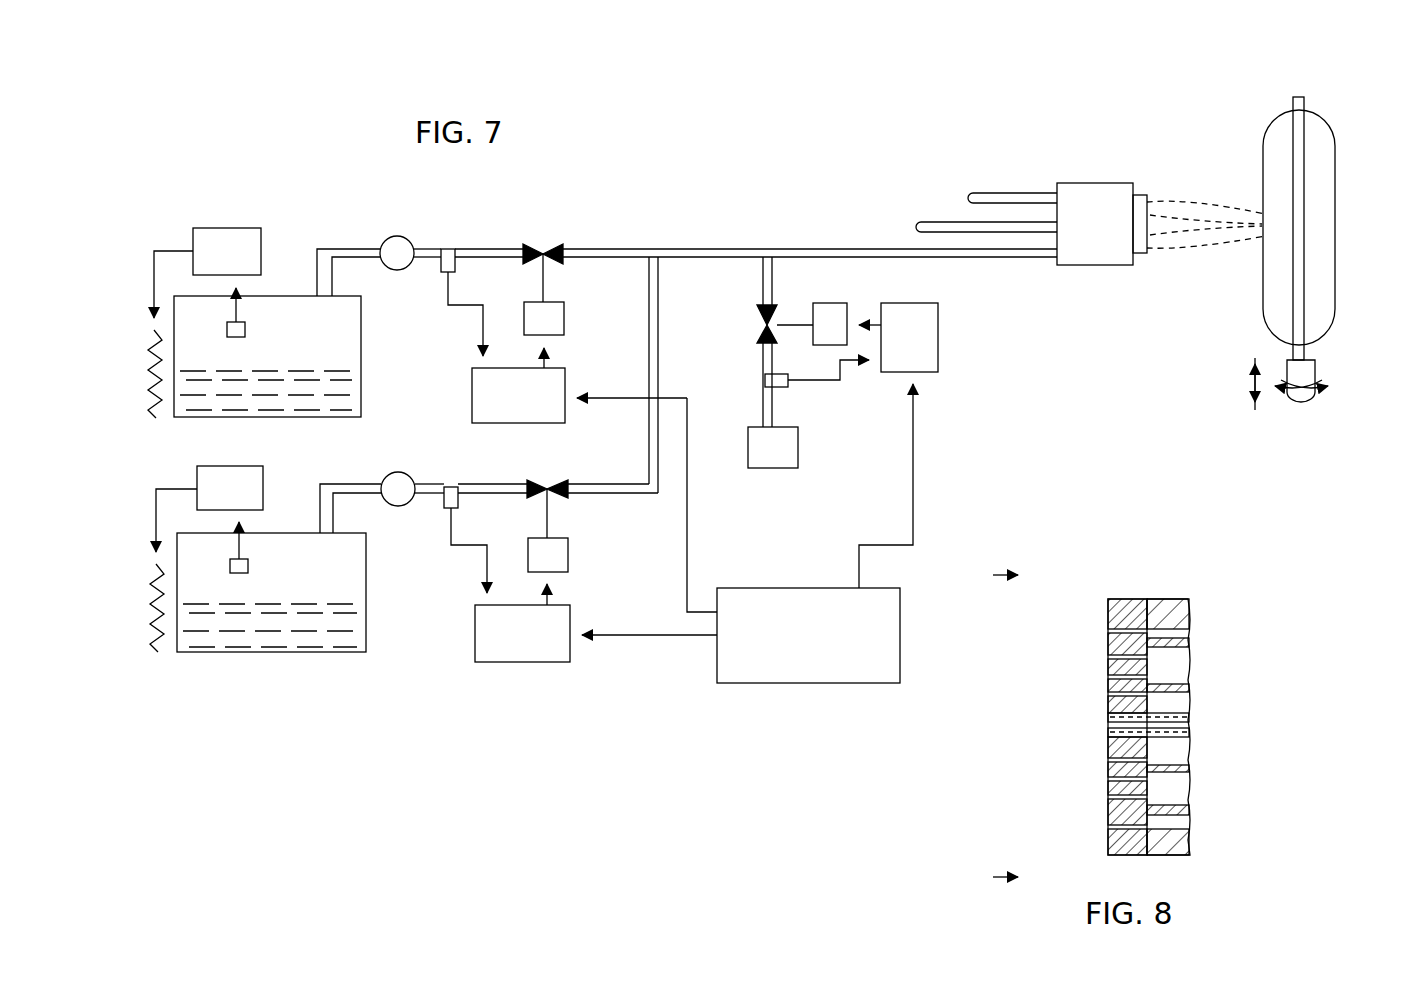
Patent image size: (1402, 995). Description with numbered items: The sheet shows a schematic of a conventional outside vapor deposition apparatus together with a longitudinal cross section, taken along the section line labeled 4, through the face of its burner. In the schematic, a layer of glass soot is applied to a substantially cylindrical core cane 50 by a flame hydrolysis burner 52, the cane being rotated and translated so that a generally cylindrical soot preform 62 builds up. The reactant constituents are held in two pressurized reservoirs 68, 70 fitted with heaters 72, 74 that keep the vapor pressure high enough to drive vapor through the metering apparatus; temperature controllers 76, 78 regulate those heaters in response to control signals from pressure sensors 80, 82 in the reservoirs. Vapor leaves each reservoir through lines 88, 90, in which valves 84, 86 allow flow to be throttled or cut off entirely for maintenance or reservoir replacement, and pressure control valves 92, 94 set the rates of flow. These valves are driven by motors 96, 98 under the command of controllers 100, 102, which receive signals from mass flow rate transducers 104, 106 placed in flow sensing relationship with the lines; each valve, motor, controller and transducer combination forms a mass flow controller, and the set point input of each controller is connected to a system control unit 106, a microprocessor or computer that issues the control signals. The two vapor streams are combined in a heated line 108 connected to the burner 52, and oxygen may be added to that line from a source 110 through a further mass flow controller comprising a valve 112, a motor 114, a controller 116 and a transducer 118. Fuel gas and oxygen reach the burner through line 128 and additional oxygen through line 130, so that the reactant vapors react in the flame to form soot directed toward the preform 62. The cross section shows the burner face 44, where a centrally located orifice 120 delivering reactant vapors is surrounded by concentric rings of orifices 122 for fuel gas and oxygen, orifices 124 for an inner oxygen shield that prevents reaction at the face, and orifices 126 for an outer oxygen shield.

In FIG. 8, the section line 4- 4 is at (1023, 726).
In FIG. 8, the burner face 44 is at (1108, 604).
In FIG. 7, the core cane 50 is at (1304, 101).
In FIG. 7, the flame hydrolysis burner 52 is at (1110, 183).
In FIG. 8, the flame hydrolysis burner 52 is at (1160, 598).
In FIG. 7, the soot preform 62 is at (1335, 258).
In FIG. 7, the reservoir 68 is at (361, 350).
In FIG. 7, the reservoir 70 is at (366, 585).
In FIG. 7, the heater 72 is at (140, 370).
In FIG. 7, the heater 74 is at (148, 602).
In FIG. 7, the temperature controller 76 is at (226, 228).
In FIG. 7, the temperature controller 78 is at (230, 470).
In FIG. 7, the pressure sensor 80 is at (245, 330).
In FIG. 7, the pressure sensor 82 is at (248, 566).
In FIG. 7, the valve 84 is at (397, 236).
In FIG. 7, the valve 86 is at (400, 472).
In FIG. 7, the line 88 is at (335, 248).
In FIG. 7, the line 90 is at (338, 483).
In FIG. 7, the pressure control valve 92 is at (543, 244).
In FIG. 7, the pressure control valve 94 is at (549, 480).
In FIG. 7, the motor 96 is at (564, 318).
In FIG. 7, the motor 98 is at (568, 560).
In FIG. 7, the controller 100 is at (565, 382).
In FIG. 7, the controller 102 is at (570, 618).
In FIG. 7, the mass flow rate transducer 104 is at (458, 248).
In FIG. 7, the system control unit 106 is at (452, 486).
In FIG. 7, the line 108 is at (718, 248).
In FIG. 7, the oxygen source 110 is at (798, 449).
In FIG. 7, the valve 112 is at (757, 332).
In FIG. 7, the motor 114 is at (835, 294).
In FIG. 7, the controller 116 is at (948, 324).
In FIG. 7, the transducer 118 is at (765, 382).
In FIG. 8, the orifice 120 is at (1108, 725).
In FIG. 8, the orifices 122 is at (1108, 648).
In FIG. 8, the orifices 124 is at (1108, 688).
In FIG. 8, the orifices 126 is at (1108, 608).
In FIG. 7, the line 128 is at (1013, 193).
In FIG. 7, the line 130 is at (934, 222).